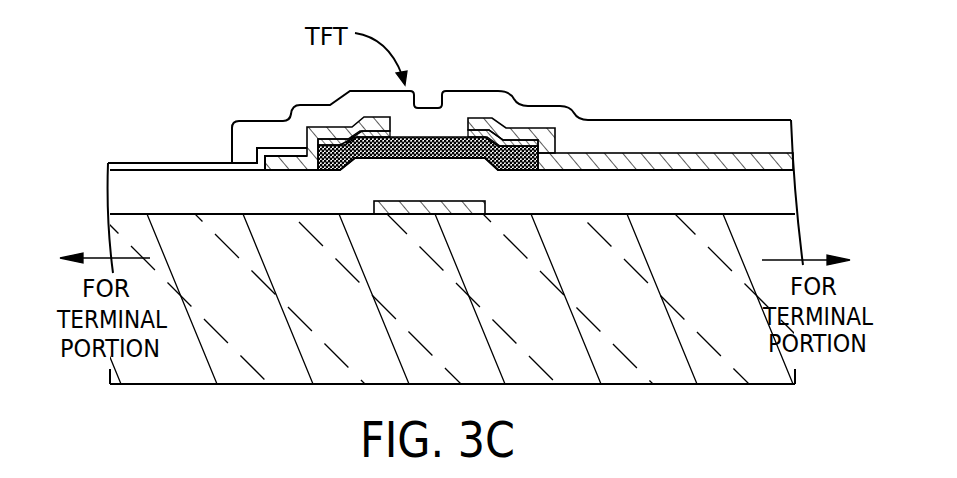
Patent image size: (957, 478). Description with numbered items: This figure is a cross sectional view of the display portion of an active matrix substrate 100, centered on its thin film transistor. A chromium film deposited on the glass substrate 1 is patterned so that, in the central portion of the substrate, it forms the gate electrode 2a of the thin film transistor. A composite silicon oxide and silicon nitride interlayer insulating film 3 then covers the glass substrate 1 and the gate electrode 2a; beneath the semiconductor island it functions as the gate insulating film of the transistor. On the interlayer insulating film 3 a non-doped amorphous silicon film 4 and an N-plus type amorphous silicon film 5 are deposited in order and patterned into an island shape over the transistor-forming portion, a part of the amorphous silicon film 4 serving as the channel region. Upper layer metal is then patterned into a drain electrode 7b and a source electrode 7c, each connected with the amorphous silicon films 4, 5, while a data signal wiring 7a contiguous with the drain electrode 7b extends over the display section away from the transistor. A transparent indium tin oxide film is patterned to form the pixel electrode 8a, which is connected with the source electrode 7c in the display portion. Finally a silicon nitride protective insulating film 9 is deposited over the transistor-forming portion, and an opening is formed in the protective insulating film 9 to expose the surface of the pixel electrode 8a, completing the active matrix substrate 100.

The glass substrate 1 is at (720, 375).
The gate electrode 2a is at (413, 212).
The interlayer insulating film 3 is at (772, 188).
The non-doped amorphous silicon film 4 is at (532, 153).
The N+ type amorphous silicon film 5 is at (480, 133).
The data signal wiring 7a is at (718, 160).
The drain electrode 7b is at (523, 135).
The source electrode 7c is at (313, 132).
The pixel electrode 8a is at (172, 162).
The protective insulating film 9 is at (650, 130).
The active matrix substrate 100 is at (692, 425).